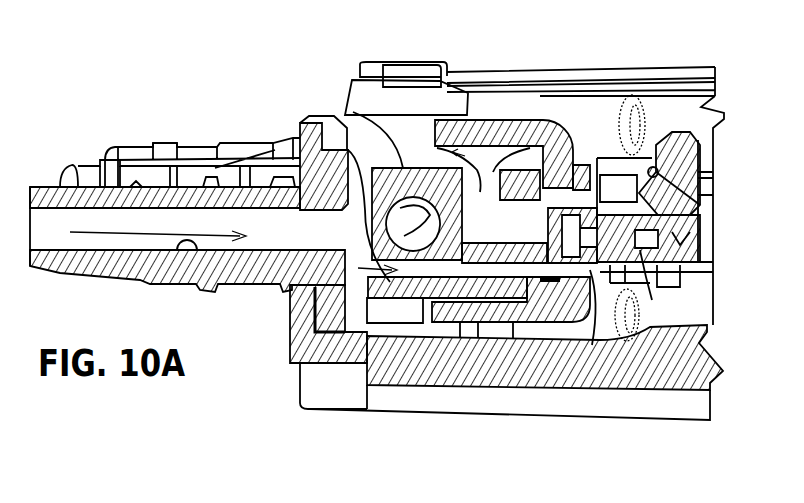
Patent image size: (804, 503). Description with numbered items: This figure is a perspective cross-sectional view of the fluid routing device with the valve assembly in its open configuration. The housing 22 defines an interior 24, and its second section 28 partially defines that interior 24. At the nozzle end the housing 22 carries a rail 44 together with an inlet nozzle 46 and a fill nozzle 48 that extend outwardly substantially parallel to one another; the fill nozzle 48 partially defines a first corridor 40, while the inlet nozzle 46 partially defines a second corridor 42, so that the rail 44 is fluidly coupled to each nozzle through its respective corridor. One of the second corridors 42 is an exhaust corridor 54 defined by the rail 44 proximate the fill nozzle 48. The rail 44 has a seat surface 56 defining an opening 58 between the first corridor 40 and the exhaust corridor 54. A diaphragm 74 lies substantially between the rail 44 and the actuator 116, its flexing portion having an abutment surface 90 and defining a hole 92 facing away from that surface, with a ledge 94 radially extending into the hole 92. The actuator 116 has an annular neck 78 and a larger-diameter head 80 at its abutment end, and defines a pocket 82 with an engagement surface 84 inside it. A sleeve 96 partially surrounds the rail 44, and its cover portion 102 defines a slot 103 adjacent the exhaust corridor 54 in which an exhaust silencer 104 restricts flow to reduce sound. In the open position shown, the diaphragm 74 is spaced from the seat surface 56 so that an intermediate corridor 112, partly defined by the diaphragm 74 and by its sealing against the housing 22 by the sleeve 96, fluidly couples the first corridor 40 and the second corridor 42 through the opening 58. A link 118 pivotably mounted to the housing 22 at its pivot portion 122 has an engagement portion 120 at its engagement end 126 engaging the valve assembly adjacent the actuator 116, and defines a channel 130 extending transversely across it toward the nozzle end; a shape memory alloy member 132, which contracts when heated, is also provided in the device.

The housing 22 is at (493, 400).
The interior 24 is at (367, 363).
The second section 28 is at (320, 365).
The first corridor 40 is at (190, 284).
The second corridor 42 is at (420, 117).
The rail 44 is at (353, 112).
The inlet nozzle 46 is at (118, 147).
The fill nozzle 48 is at (66, 172).
The exhaust corridor 54 is at (497, 172).
The seat surface 56 is at (507, 251).
The opening 58 is at (555, 195).
The diaphragm 74 is at (655, 342).
The neck 78 is at (657, 215).
The head 80 is at (590, 190).
The pocket 82 is at (700, 212).
The engagement surface 84 is at (695, 252).
The abutment surface 90 is at (457, 234).
The hole 92 is at (616, 286).
The ledge 94 is at (625, 268).
The sleeve 96 is at (490, 125).
The cover portion 102 is at (528, 350).
The slot 103 is at (463, 117).
The exhaust silencer 104 is at (518, 110).
The intermediate corridor 112 is at (557, 310).
The actuator 116 is at (680, 290).
The link 118 is at (714, 133).
The engagement portion 120 is at (700, 240).
The pivot portion 122 is at (703, 158).
The engagement end 126 is at (690, 266).
The channel 130 is at (653, 155).
The shape memory alloy member 132 is at (648, 128).